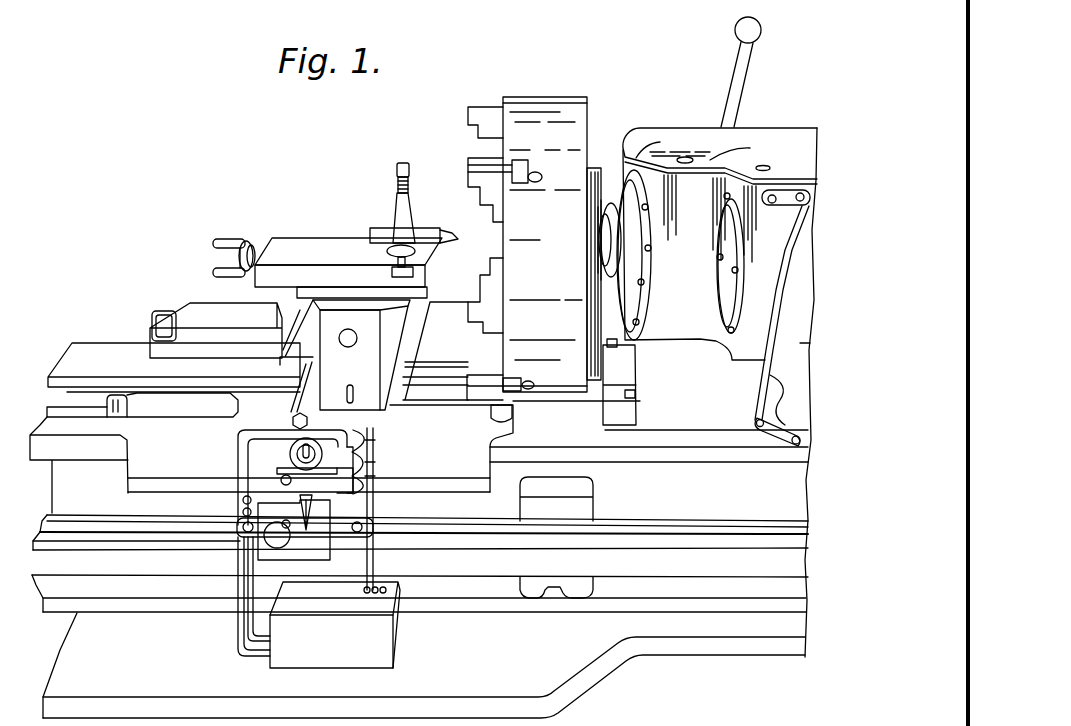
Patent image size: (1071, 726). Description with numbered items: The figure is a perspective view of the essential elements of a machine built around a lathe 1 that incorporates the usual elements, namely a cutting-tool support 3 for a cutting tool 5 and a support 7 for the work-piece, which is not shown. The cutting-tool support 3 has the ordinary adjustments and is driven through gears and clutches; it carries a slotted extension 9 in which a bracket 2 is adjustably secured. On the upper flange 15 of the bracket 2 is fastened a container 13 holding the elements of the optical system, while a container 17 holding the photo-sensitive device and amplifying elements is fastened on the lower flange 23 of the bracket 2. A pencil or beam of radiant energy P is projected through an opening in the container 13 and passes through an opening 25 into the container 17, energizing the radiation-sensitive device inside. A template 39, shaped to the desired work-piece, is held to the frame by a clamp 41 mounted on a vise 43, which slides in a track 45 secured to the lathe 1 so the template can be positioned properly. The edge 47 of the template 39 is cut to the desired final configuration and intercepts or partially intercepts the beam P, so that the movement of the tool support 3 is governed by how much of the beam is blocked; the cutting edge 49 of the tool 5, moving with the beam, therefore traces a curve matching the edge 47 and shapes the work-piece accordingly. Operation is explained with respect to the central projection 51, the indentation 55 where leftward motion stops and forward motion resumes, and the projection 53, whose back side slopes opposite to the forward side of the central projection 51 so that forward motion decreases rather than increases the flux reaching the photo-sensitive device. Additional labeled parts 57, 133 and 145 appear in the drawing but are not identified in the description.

The lathe 1 is at (645, 99).
The bracket 2 is at (237, 627).
The cutting-tool support 3 is at (300, 243).
The cutting tool 5 is at (430, 225).
The work-piece support 7 is at (470, 111).
The slotted extension 9 is at (290, 450).
The container 13 is at (358, 373).
The upper flange 15 is at (298, 414).
The container 17 is at (386, 658).
The lower flange 23 is at (238, 660).
The opening 25 is at (378, 587).
The template 39 is at (356, 486).
The clamp 41 is at (282, 485).
The vise 43 is at (305, 557).
The track 45 is at (640, 524).
The edge 47 is at (326, 499).
The cutting edge 49 is at (454, 238).
The central projection 51 is at (372, 463).
The projection 53 is at (378, 446).
The indentation 55 is at (349, 470).
The cam lobe 57 is at (372, 470).
The cross slide block 133 is at (206, 306).
The carriage 145 is at (90, 360).
The beam of radiant energy P is at (366, 562).